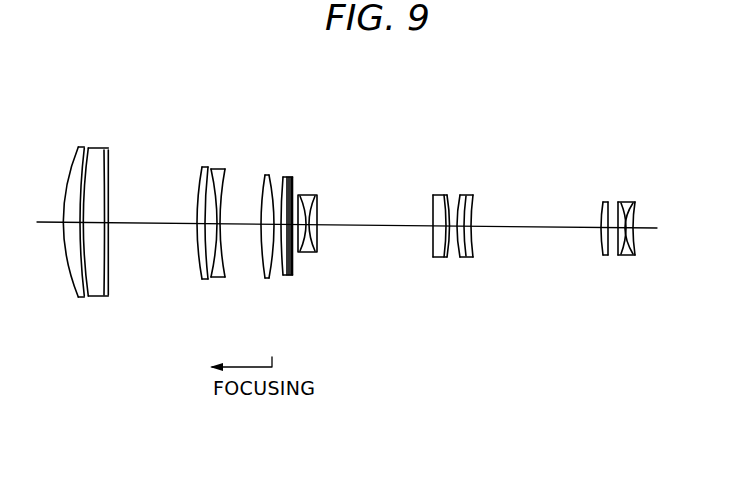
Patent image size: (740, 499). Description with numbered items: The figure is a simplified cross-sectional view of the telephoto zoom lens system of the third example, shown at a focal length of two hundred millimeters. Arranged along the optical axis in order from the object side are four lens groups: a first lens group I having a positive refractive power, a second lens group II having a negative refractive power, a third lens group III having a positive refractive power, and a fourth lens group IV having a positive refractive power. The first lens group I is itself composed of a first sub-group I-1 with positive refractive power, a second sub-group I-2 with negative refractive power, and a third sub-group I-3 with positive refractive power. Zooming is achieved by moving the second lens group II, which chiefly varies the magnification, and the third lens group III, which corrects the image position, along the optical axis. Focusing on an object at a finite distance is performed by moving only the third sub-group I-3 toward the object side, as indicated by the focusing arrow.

The first lens group I is at (63, 124).
The first sub-group I-1 is at (113, 297).
The second sub-group I-2 is at (228, 280).
The third sub-group I-3 is at (255, 280).
The second lens group II is at (298, 259).
The third lens group III is at (450, 263).
The fourth lens group IV is at (638, 263).